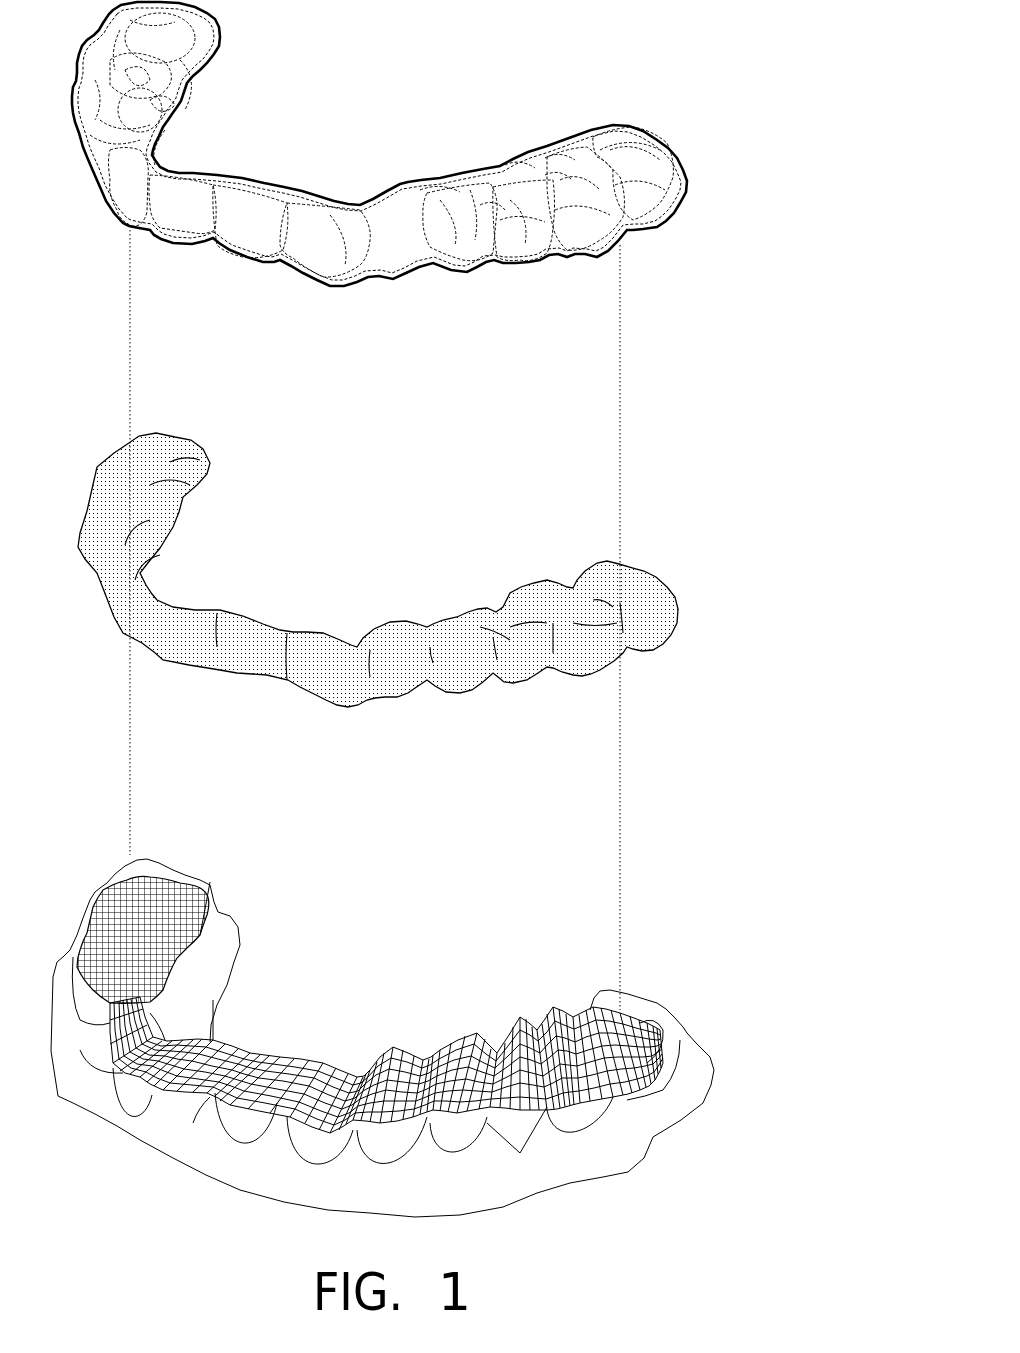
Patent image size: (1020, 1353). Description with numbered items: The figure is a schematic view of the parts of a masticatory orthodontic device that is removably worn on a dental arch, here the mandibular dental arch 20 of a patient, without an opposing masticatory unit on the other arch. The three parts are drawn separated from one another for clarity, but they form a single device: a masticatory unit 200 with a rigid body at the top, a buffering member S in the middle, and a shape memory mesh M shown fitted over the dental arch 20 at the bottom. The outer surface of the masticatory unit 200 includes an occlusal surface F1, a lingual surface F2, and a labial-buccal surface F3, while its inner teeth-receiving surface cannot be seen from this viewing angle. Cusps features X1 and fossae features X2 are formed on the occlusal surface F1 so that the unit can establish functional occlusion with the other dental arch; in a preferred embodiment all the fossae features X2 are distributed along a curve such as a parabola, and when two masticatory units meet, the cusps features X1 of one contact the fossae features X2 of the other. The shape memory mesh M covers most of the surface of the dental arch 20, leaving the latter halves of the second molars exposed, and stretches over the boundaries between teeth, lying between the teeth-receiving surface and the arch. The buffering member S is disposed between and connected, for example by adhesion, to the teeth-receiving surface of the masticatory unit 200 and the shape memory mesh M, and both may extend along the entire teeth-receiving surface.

The masticatory unit 200 is at (690, 180).
The occlusal surface F1 is at (620, 143).
The lingual surface F2 is at (187, 100).
The labial-buccal surface F3 is at (520, 243).
The cusps feature X1 is at (513, 160).
The fossae feature X2 is at (490, 203).
The buffering member S is at (680, 607).
The shape memory mesh M is at (660, 1060).
The mandibular dental arch 20 is at (653, 1090).